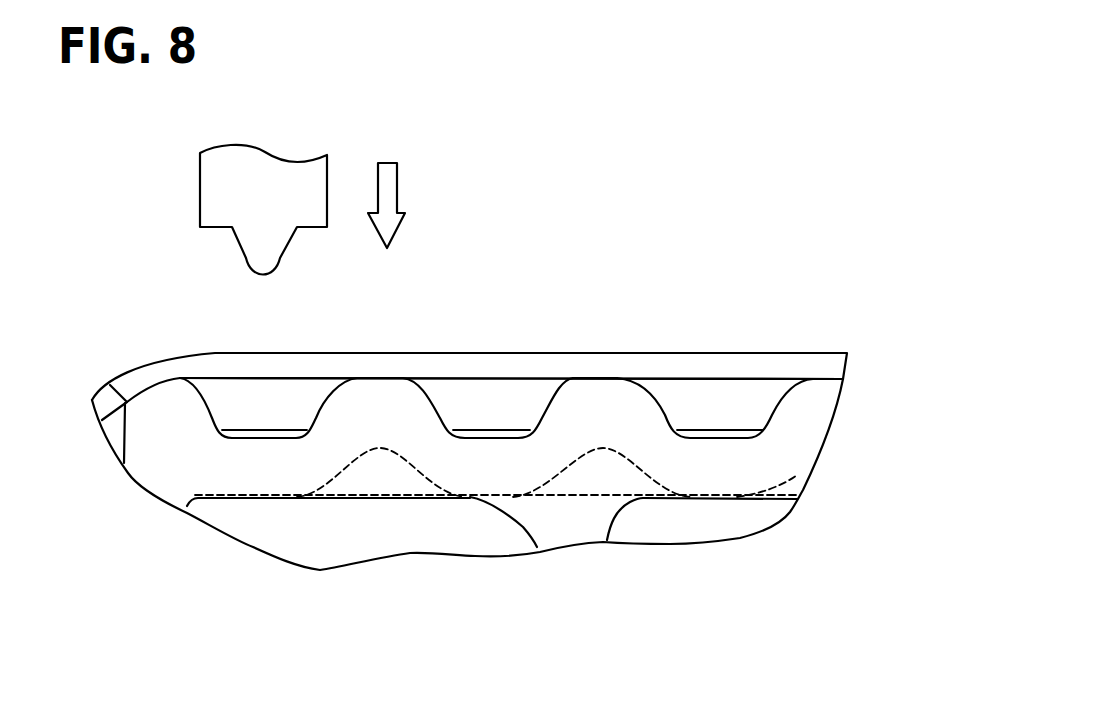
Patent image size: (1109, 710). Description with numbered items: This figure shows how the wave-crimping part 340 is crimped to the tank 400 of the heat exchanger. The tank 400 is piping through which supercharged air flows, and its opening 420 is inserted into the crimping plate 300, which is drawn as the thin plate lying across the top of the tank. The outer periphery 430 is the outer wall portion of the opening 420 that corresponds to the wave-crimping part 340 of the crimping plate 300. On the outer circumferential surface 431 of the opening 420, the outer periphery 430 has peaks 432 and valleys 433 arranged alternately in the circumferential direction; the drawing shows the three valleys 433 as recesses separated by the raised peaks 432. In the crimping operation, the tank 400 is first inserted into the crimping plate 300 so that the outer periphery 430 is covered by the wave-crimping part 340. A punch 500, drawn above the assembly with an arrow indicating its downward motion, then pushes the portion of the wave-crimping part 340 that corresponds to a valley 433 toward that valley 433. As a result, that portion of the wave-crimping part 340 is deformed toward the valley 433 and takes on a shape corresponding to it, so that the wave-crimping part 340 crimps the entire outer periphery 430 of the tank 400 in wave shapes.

The punch 500 is at (200, 188).
The crimping plate 300 is at (755, 353).
The wave-crimping part 340 is at (662, 365).
The tank 400 is at (516, 442).
The opening 420 is at (237, 498).
The outer periphery 430 is at (700, 463).
The outer circumferential surface 431 is at (313, 418).
The peaks 432 is at (395, 400).
The valleys 433 is at (280, 438).